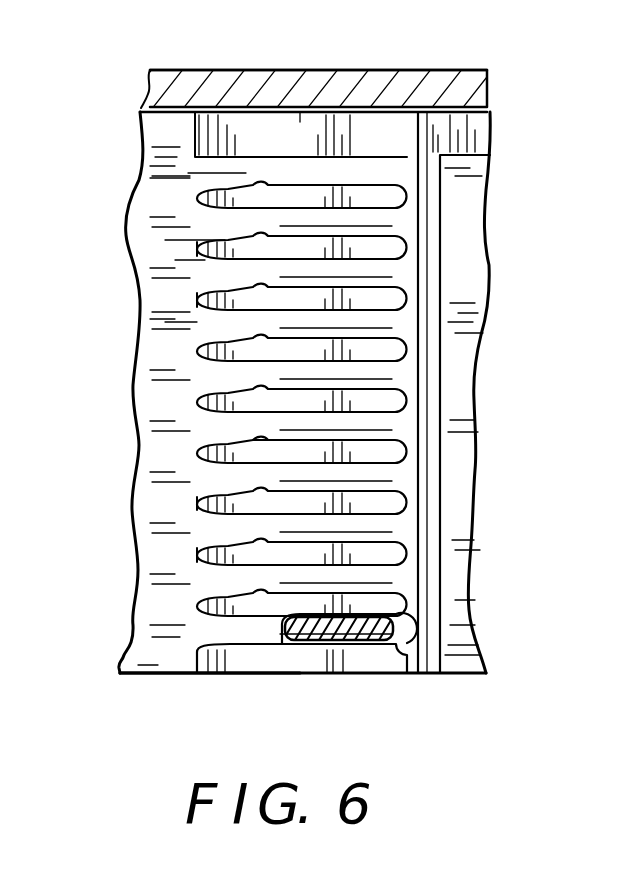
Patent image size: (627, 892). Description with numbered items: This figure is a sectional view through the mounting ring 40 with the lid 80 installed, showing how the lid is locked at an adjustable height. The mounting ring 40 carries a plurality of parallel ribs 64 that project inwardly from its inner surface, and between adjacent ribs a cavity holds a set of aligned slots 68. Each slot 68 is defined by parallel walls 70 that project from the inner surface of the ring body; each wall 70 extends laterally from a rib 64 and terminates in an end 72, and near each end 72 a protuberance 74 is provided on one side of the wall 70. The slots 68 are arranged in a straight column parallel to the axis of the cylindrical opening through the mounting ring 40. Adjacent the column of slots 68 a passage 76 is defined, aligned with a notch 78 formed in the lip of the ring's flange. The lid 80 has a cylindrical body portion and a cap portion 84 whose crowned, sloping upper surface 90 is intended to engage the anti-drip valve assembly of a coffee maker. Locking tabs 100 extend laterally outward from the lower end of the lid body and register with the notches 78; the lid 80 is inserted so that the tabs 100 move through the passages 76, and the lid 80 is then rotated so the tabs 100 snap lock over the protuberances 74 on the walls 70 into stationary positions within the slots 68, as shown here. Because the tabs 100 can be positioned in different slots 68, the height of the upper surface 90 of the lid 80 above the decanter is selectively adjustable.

The mounting ring 40 is at (483, 568).
The rib 64 is at (423, 610).
The slot 68 is at (300, 220).
The wall 70 is at (367, 452).
The end 72 is at (197, 301).
The protuberance 74 is at (262, 440).
The passage 76 is at (173, 678).
The notch 78 is at (177, 128).
The lid 80 is at (470, 53).
The cap portion 84 is at (478, 86).
The upper surface 90 is at (350, 70).
The locking tab 100 is at (318, 642).